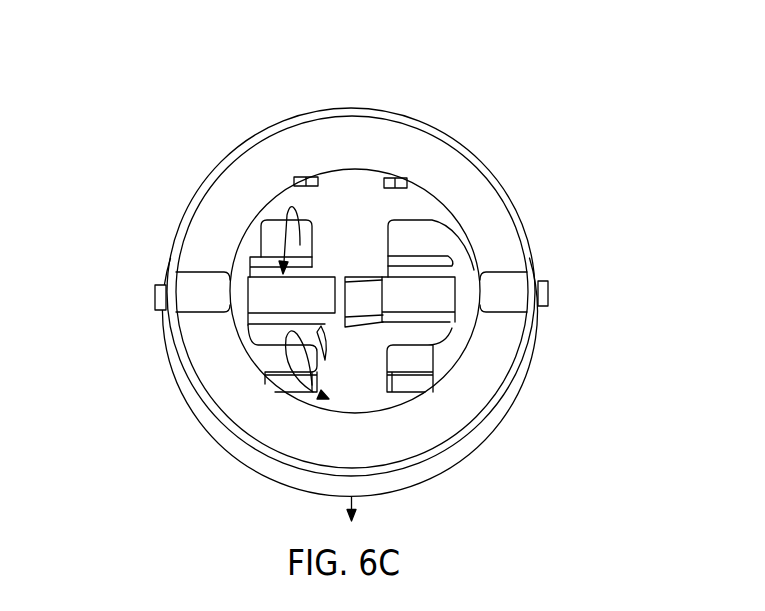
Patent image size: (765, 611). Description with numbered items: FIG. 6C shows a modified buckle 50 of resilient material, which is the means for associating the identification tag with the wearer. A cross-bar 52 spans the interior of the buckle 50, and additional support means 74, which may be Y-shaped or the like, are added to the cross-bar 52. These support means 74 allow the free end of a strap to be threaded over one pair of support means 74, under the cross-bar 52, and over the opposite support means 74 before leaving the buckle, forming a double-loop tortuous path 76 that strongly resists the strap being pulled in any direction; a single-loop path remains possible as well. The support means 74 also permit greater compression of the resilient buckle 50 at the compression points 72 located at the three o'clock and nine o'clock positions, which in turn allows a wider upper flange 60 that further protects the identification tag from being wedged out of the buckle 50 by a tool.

The buckle 50 is at (352, 271).
The cross-bar 52 is at (433, 293).
The upper flange 60 is at (257, 170).
The compression points 72 is at (155, 294).
The support means 74 is at (430, 233).
The double-loop tortuous path 76 is at (350, 96).